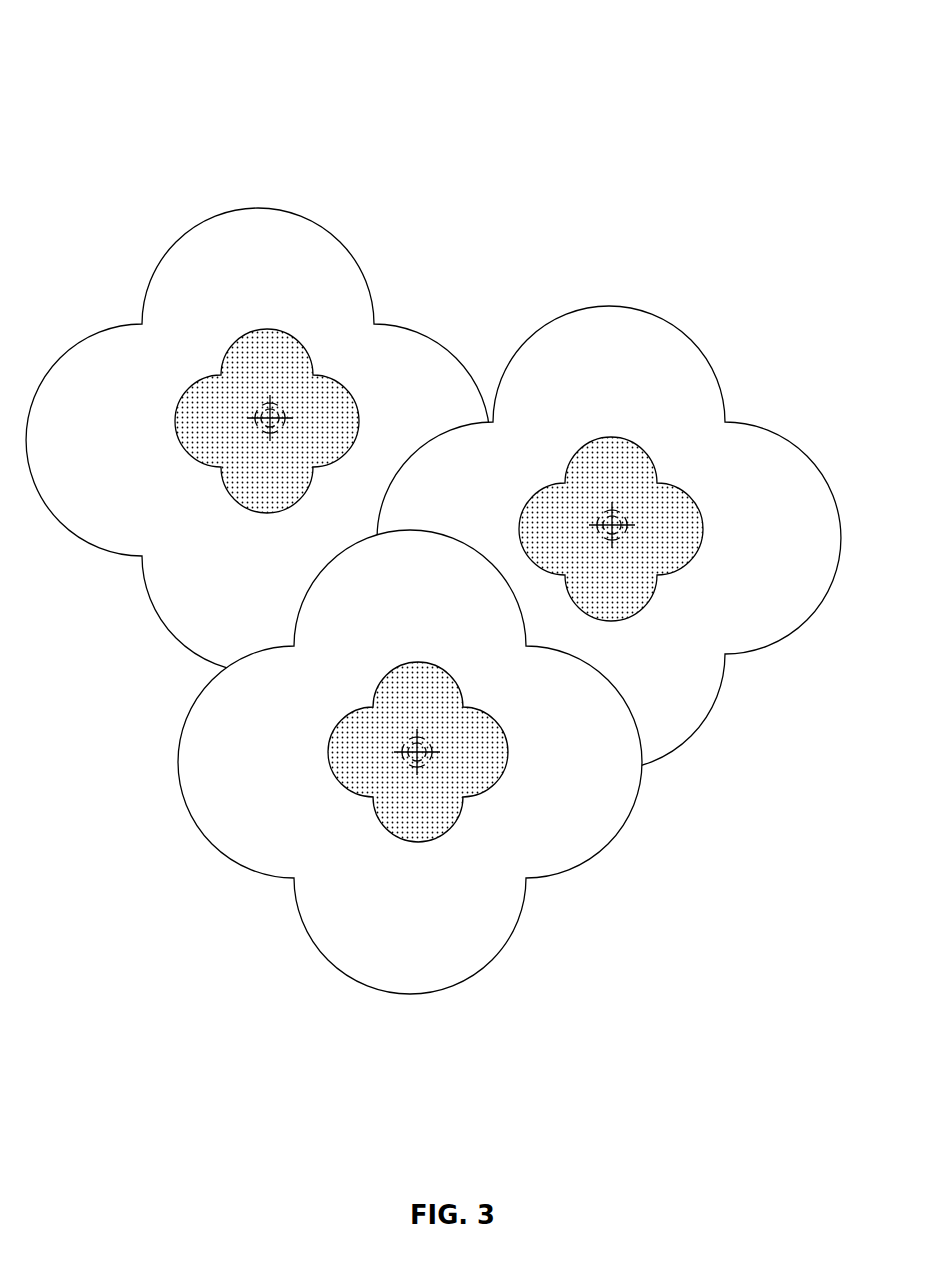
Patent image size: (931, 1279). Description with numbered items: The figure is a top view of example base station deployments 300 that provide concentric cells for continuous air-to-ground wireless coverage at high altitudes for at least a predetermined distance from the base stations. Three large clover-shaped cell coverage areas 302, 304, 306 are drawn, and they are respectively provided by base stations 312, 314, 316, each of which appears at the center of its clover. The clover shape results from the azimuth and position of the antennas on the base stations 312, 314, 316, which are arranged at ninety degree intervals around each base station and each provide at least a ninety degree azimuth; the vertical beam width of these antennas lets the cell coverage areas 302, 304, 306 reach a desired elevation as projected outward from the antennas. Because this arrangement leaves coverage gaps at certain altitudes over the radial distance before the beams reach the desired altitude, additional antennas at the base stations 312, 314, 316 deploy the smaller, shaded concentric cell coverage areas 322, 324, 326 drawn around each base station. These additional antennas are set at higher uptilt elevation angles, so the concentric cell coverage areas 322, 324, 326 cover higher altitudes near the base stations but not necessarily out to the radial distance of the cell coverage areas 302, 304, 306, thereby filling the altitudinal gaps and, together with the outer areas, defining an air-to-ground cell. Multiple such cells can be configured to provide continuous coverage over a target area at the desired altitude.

The base station deployments 300 is at (433, 505).
The cell coverage area 302 is at (167, 255).
The cell coverage area 304 is at (694, 347).
The cell coverage area 306 is at (552, 873).
The base station 312 is at (270, 418).
The base station 314 is at (612, 525).
The base station 316 is at (417, 752).
The concentric cell coverage area 322 is at (295, 338).
The concentric cell coverage area 324 is at (602, 437).
The concentric cell coverage area 326 is at (377, 820).